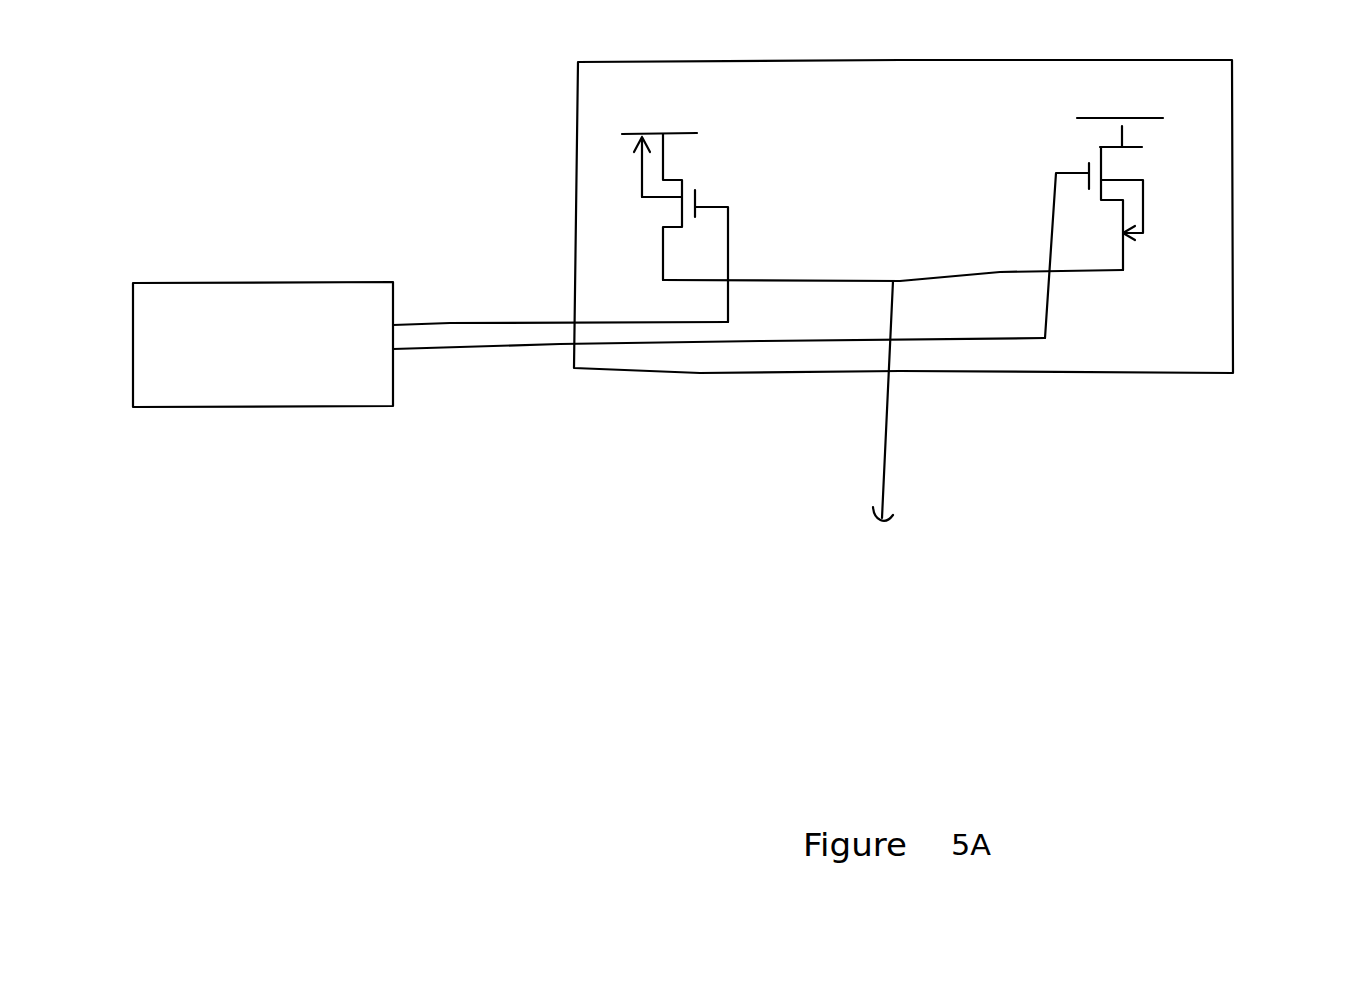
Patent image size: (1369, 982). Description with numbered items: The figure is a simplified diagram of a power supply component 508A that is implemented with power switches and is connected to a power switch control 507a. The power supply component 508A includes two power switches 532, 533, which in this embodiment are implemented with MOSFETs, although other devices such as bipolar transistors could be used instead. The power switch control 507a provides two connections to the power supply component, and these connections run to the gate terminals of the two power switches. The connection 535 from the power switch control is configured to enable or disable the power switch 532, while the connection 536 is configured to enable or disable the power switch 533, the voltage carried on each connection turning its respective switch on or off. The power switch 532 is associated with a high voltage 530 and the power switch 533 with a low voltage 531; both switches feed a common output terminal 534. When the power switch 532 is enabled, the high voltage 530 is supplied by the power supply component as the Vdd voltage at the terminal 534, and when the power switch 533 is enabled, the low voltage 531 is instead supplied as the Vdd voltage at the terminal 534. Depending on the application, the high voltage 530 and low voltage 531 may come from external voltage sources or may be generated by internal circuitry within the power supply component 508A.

The power switch control 507a is at (267, 283).
The power supply component 508A is at (1235, 187).
The high voltage 530 is at (683, 131).
The low voltage 531 is at (1143, 113).
The power switch 532 is at (683, 181).
The power switch 533 is at (1147, 193).
The terminal 534 is at (884, 455).
The connection 535 is at (442, 328).
The connection 536 is at (458, 351).